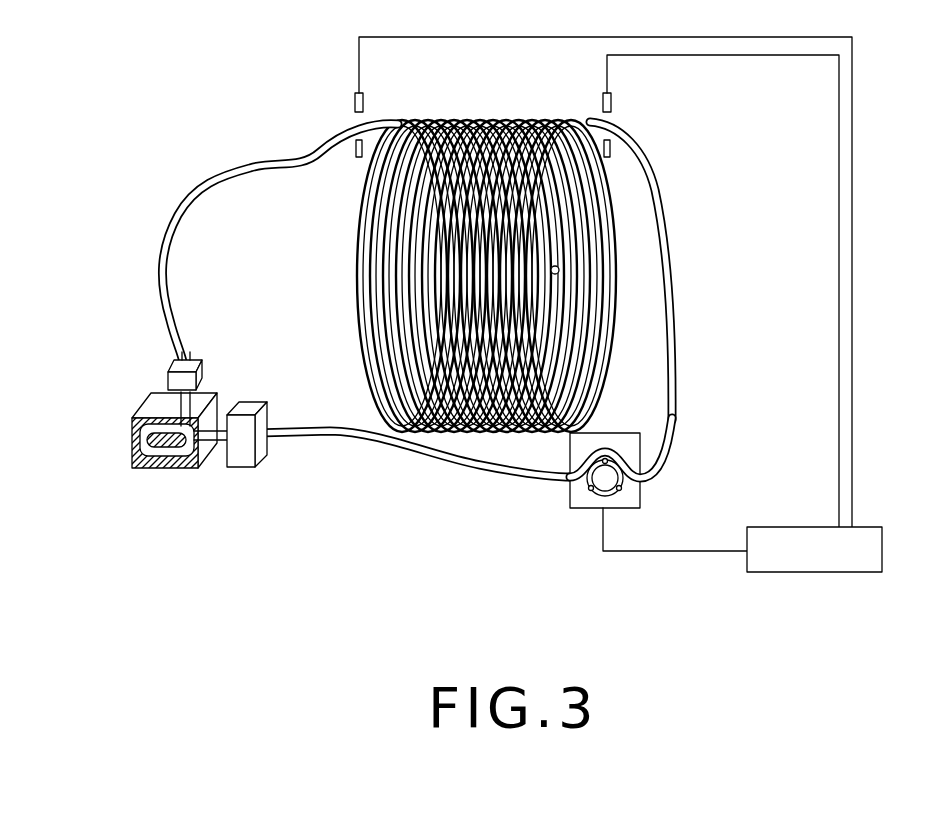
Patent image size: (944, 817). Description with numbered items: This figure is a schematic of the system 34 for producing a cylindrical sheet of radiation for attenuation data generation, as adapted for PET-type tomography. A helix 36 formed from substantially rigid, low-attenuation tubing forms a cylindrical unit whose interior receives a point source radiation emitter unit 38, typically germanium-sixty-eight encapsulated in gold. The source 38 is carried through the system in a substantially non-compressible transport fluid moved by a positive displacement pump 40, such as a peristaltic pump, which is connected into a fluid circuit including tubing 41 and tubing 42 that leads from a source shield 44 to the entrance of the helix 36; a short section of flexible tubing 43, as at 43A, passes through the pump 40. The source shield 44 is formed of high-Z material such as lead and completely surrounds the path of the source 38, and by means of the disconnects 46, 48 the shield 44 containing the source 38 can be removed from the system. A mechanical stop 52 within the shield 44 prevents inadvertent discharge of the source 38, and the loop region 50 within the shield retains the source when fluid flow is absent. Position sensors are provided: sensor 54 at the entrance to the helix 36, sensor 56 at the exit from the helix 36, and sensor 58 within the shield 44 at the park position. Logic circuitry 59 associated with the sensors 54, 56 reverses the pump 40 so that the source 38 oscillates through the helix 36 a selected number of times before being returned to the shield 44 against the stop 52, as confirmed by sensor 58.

The system for producing a cylindrical sheet of radiation 34 is at (155, 151).
The helix 36 is at (350, 237).
The point source radiation emitter unit 38 is at (560, 276).
The positive displacement pump 40 is at (645, 500).
The tubing 41 is at (450, 465).
The tubing 42 is at (265, 167).
The flexible tubing 43 is at (663, 237).
The flexible tubing section in pump 43A is at (622, 453).
The source shield 44 is at (195, 468).
The disconnect 46 is at (168, 377).
The disconnect 48 is at (262, 468).
The chamber 50 is at (168, 468).
The mechanical stop 52 is at (133, 452).
The sensor 54 is at (356, 100).
The sensor 56 is at (612, 102).
The sensor 58 is at (130, 441).
The logic circuitry 59 is at (796, 575).